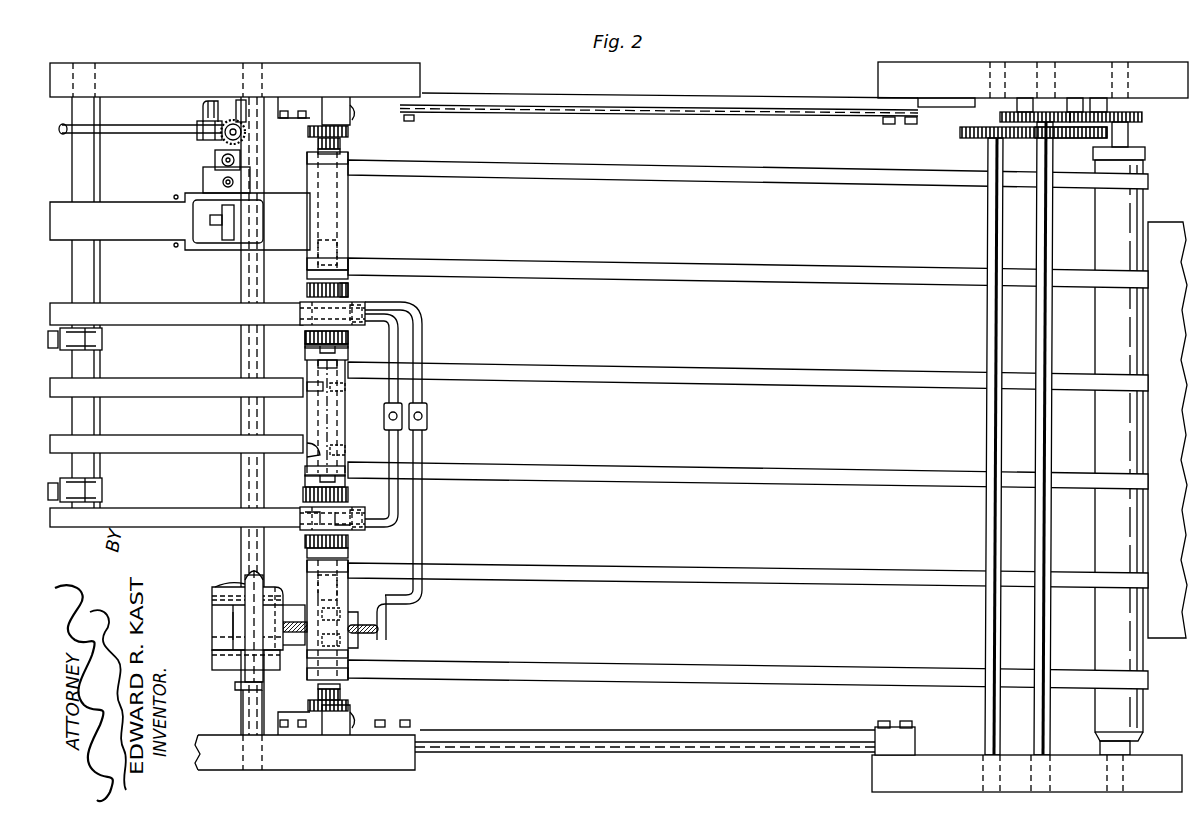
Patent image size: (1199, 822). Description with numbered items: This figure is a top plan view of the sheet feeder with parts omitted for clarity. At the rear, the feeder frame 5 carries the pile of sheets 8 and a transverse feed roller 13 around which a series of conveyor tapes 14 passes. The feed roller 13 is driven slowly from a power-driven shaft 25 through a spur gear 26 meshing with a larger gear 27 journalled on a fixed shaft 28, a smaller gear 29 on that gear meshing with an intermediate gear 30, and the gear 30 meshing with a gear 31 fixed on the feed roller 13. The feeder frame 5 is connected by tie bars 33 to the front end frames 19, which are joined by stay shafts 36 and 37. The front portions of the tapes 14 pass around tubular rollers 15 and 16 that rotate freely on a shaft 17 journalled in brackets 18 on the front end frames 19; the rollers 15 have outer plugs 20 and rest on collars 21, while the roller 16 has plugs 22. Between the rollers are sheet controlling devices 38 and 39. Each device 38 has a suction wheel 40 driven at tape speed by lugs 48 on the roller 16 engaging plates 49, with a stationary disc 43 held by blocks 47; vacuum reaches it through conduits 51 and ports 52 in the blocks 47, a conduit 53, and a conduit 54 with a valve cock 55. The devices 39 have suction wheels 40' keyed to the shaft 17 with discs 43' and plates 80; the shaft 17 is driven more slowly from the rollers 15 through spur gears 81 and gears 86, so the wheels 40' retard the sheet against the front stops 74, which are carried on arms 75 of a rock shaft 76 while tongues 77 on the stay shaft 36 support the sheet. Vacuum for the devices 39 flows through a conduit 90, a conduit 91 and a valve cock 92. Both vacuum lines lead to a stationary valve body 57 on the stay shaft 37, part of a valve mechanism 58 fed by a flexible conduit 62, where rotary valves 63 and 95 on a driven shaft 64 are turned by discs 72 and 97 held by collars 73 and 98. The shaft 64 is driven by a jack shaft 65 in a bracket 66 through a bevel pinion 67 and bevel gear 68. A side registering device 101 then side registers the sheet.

The feeder frame 5 is at (939, 72).
The pile of sheets 8 is at (1167, 430).
The feed roller 13 is at (1093, 213).
The conveyor tapes 14 is at (636, 176).
The tubular rollers 15 is at (349, 206).
The tubular roller 16 is at (346, 410).
The shaft 17 is at (306, 412).
The brackets 18 is at (346, 110).
The front end frames 19 is at (295, 68).
The plugs 20 is at (318, 150).
The collars 21 is at (349, 247).
The plugs 22 is at (346, 388).
The shaft 25 is at (987, 154).
The spur gear 26 is at (960, 133).
The gear 27 is at (1083, 137).
The shaft 28 is at (1034, 227).
The gear 29 is at (1033, 110).
The intermediate gear 30 is at (1082, 110).
The gear 31 is at (1143, 118).
The tie bars 33 is at (752, 93).
The stay shaft 36 is at (240, 471).
The stay shaft 37 is at (242, 722).
The sheet controlling devices 38 is at (355, 345).
The sheet controlling devices 39 is at (355, 291).
The suction wheel 40 is at (324, 405).
The suction wheels 40' is at (326, 425).
The discs 43 is at (309, 332).
The discs 43' is at (368, 295).
The blocks 47 is at (296, 318).
The lugs 48 is at (307, 389).
The plates 49 is at (349, 357).
The conduits 51 is at (349, 323).
The ports 52 is at (305, 355).
The conduit 53 is at (393, 483).
The conduit 54 is at (388, 630).
The valve cock 55 is at (345, 656).
The valve body 57 is at (211, 633).
The valve mechanism 58 is at (208, 616).
The flexible conduit 62 is at (288, 609).
The rotary valve 63 is at (212, 656).
The driven shaft 64 is at (244, 700).
The jack shaft 65 is at (149, 112).
The bracket 66 is at (203, 112).
The bevel pinion 67 is at (225, 140).
The bevel gear 68 is at (239, 106).
The valve driving disc 72 is at (212, 668).
The collar 73 is at (235, 680).
The front stops 74 is at (50, 342).
The arms 75 is at (100, 346).
The rock shaft 76 is at (85, 277).
The tongues 77 is at (173, 320).
The plates 80 is at (307, 285).
The spur gears 81 is at (342, 144).
The gears 86 is at (308, 131).
The conduit 90 is at (416, 340).
The conduit 91 is at (418, 600).
The valve cock 92 is at (350, 618).
The rotary valve 95 is at (212, 600).
The disc 97 is at (220, 593).
The collar 98 is at (241, 581).
The side registering device 101 is at (197, 187).